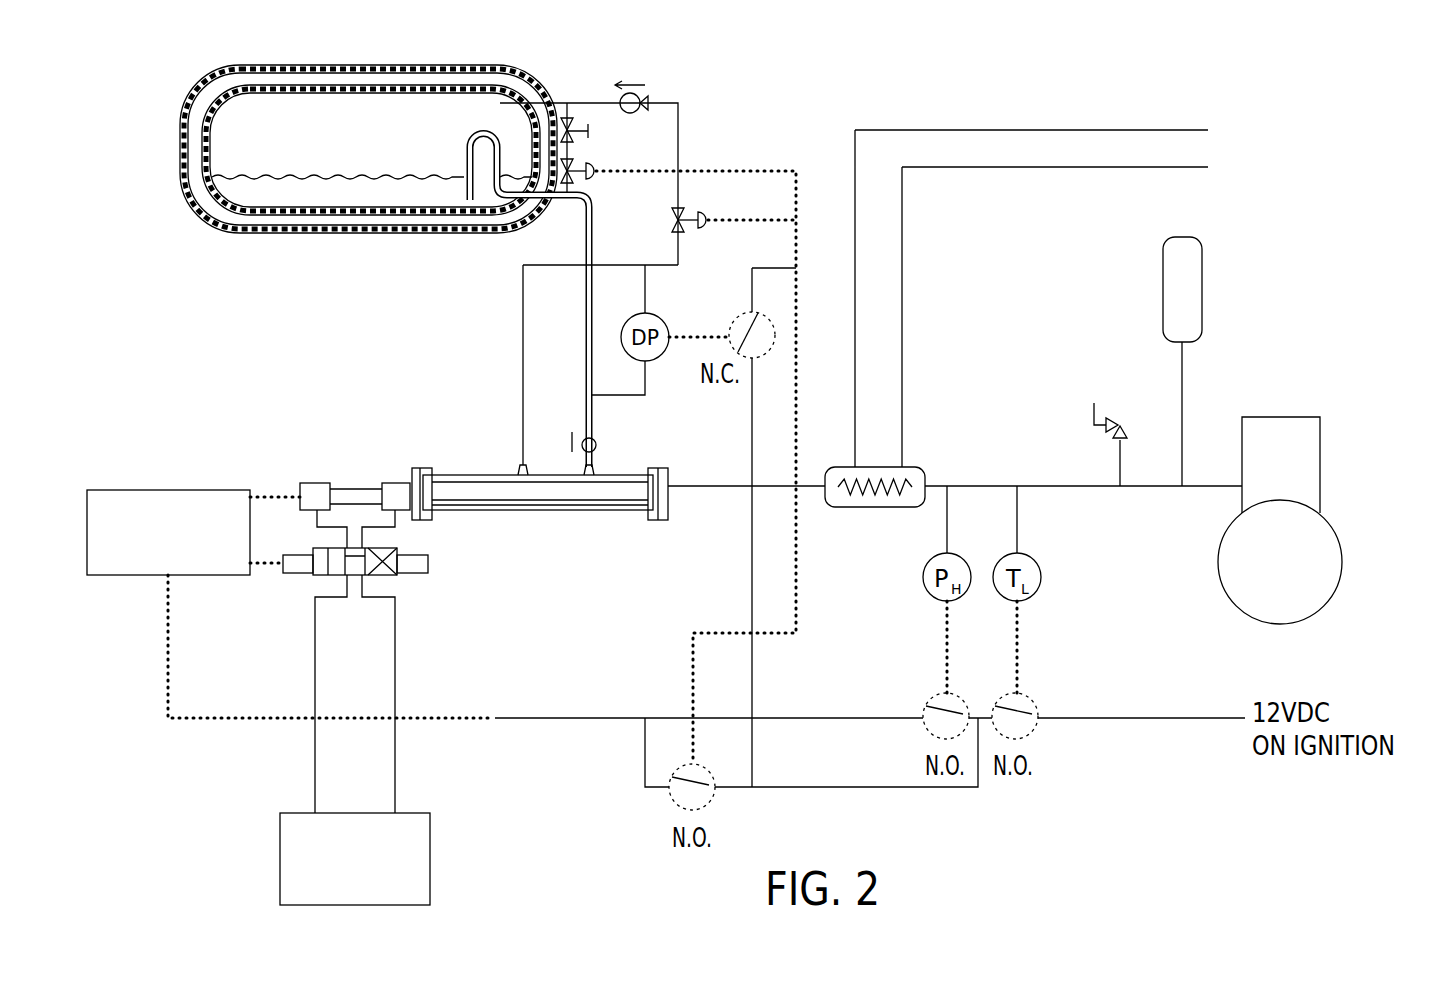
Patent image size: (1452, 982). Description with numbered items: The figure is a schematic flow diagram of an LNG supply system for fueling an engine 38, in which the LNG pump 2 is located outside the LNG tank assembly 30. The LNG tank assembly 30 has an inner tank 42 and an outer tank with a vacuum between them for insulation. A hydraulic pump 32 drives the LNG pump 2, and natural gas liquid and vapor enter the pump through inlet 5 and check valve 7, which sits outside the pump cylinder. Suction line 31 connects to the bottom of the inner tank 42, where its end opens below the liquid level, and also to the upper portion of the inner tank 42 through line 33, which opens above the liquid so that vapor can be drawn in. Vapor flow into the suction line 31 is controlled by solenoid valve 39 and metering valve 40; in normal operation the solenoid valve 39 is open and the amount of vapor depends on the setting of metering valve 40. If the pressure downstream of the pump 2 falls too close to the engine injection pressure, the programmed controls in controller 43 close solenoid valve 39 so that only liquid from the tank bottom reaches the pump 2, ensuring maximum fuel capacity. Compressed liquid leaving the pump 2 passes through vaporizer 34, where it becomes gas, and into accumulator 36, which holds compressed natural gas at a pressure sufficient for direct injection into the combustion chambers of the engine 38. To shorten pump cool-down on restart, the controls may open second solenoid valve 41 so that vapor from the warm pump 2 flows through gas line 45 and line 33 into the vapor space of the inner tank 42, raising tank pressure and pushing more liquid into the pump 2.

The LNG pump 2 is at (613, 492).
The inlet 5 is at (592, 452).
The check valve 7 is at (597, 440).
The LNG tank assembly 30 is at (192, 208).
The suction line 31 is at (585, 228).
The hydraulic pump 32 is at (280, 852).
The line 33 is at (507, 95).
The vaporizer 34 is at (920, 467).
The accumulator 36 is at (1163, 298).
The engine 38 is at (1222, 584).
The solenoid valve 39 is at (593, 178).
The metering valve 40 is at (590, 128).
The second solenoid valve 41 is at (700, 216).
The inner tank 42 is at (380, 87).
The controller 43 is at (158, 497).
The gas line 45 is at (523, 345).